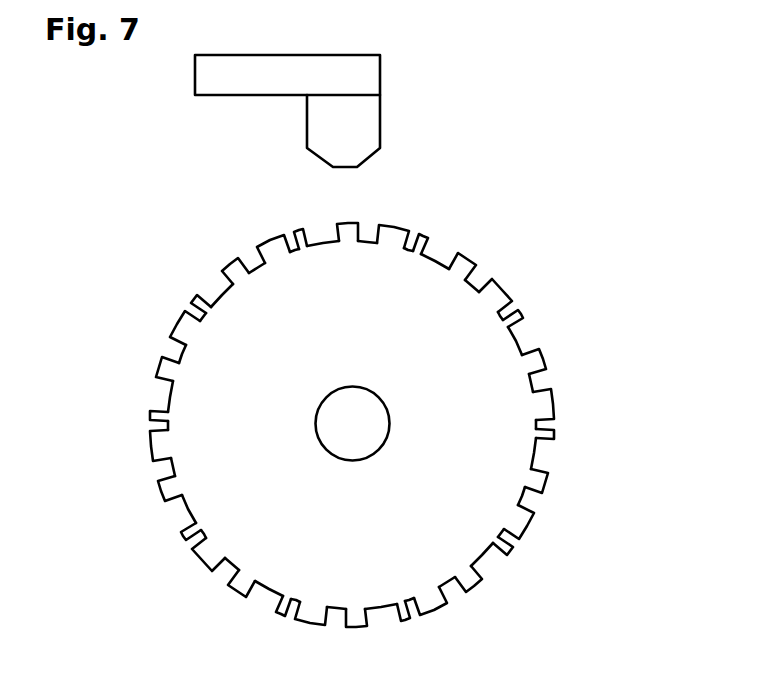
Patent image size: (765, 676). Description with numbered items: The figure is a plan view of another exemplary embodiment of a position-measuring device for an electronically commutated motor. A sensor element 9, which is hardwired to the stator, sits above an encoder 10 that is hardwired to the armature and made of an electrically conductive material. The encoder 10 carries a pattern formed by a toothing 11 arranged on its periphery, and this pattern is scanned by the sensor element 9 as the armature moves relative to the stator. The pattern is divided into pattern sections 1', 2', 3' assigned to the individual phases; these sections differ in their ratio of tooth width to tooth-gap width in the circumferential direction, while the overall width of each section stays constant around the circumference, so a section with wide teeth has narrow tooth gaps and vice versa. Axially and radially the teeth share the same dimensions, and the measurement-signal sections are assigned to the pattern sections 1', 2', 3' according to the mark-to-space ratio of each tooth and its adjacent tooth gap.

The sensor element 9 is at (367, 122).
The encoder 10 is at (368, 344).
The toothing 11 is at (367, 405).
The pattern section 1' is at (352, 404).
The pattern section 2' is at (352, 405).
The pattern section 3' is at (352, 407).